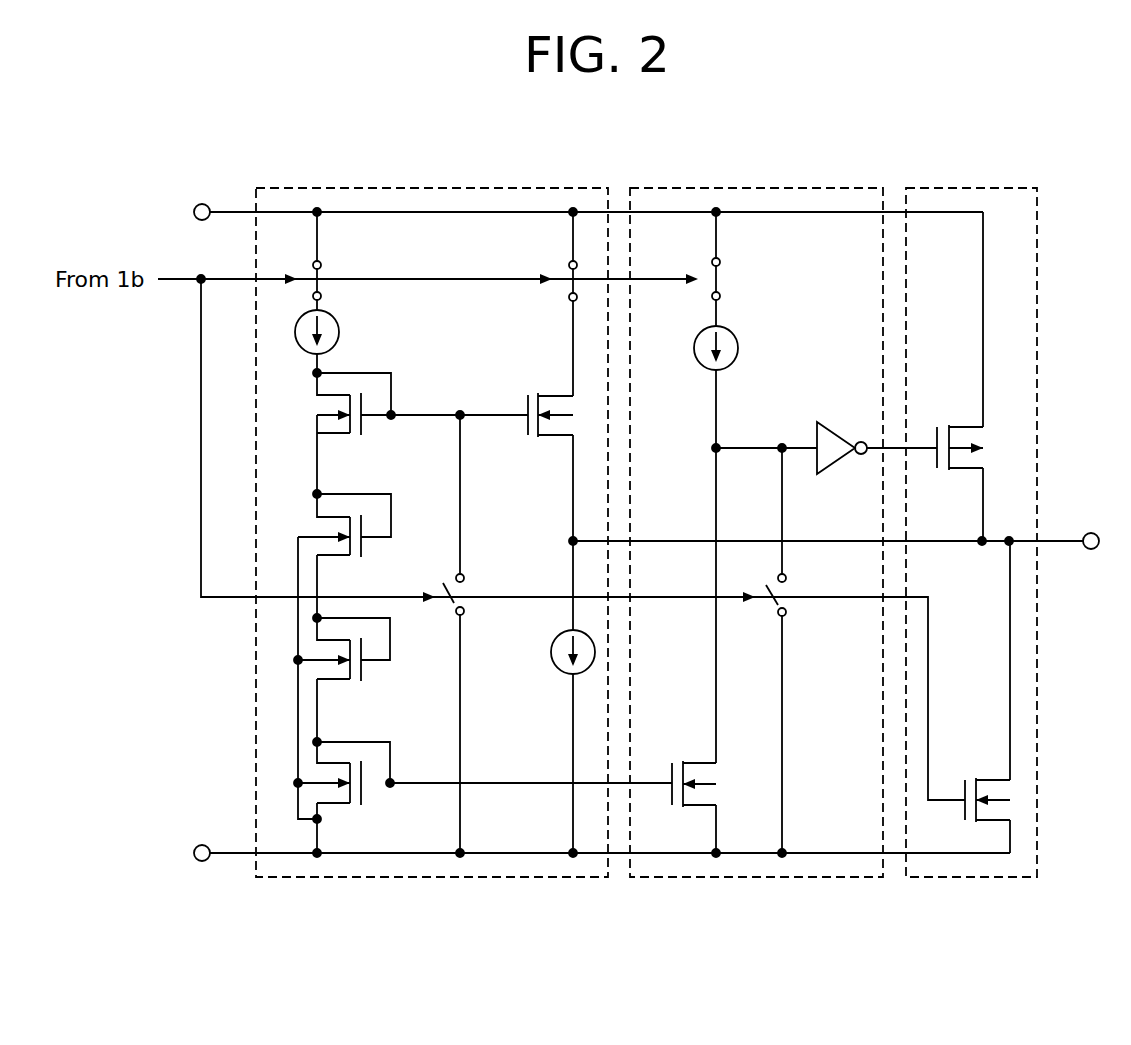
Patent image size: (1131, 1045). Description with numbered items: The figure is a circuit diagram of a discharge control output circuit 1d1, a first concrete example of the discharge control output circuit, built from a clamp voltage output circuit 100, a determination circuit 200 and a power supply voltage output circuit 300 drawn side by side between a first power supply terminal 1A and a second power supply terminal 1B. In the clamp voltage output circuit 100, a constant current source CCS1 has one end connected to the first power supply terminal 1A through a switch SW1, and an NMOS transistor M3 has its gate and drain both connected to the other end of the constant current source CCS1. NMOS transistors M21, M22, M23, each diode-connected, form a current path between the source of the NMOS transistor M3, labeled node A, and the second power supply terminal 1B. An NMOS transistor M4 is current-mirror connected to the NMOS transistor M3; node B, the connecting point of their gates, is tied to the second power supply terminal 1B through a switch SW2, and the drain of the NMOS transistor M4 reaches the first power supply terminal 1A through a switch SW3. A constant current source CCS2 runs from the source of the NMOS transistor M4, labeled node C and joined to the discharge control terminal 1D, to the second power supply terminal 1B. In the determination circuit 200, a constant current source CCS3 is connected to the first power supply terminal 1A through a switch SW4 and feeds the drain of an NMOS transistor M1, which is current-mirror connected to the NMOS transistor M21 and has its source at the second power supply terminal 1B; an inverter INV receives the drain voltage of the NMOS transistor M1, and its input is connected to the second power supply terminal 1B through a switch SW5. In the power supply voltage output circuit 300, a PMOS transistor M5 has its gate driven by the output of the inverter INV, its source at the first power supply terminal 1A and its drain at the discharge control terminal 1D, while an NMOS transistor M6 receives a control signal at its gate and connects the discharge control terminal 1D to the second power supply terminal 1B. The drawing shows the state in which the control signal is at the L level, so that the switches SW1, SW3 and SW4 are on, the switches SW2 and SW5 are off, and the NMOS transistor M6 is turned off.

The first power supply terminal 1A is at (197, 205).
The second power supply terminal 1B is at (195, 845).
The discharge control terminal 1D is at (1091, 532).
The discharge control output circuit 1d1 is at (991, 130).
The clamp voltage output circuit 100 is at (430, 877).
The determination circuit 200 is at (763, 877).
The power supply voltage output circuit 300 is at (968, 877).
The switch SW1 is at (321, 262).
The switch SW2 is at (464, 578).
The switch SW3 is at (569, 262).
The switch SW4 is at (721, 262).
The switch SW5 is at (778, 617).
The constant current source CCS1 is at (340, 333).
The constant current source CCS2 is at (561, 670).
The constant current source CCS3 is at (703, 366).
The NMOS transistor M1 is at (690, 762).
The NMOS transistor M3 is at (363, 430).
The NMOS transistor M4 is at (553, 394).
The PMOS transistor M5 is at (956, 426).
The NMOS transistor M6 is at (990, 778).
The NMOS transistor M21 is at (363, 800).
The NMOS transistor M22 is at (363, 678).
The NMOS transistor M23 is at (363, 552).
The inverter INV is at (838, 426).
The node A is at (312, 490).
The node B is at (460, 410).
The node C is at (568, 538).